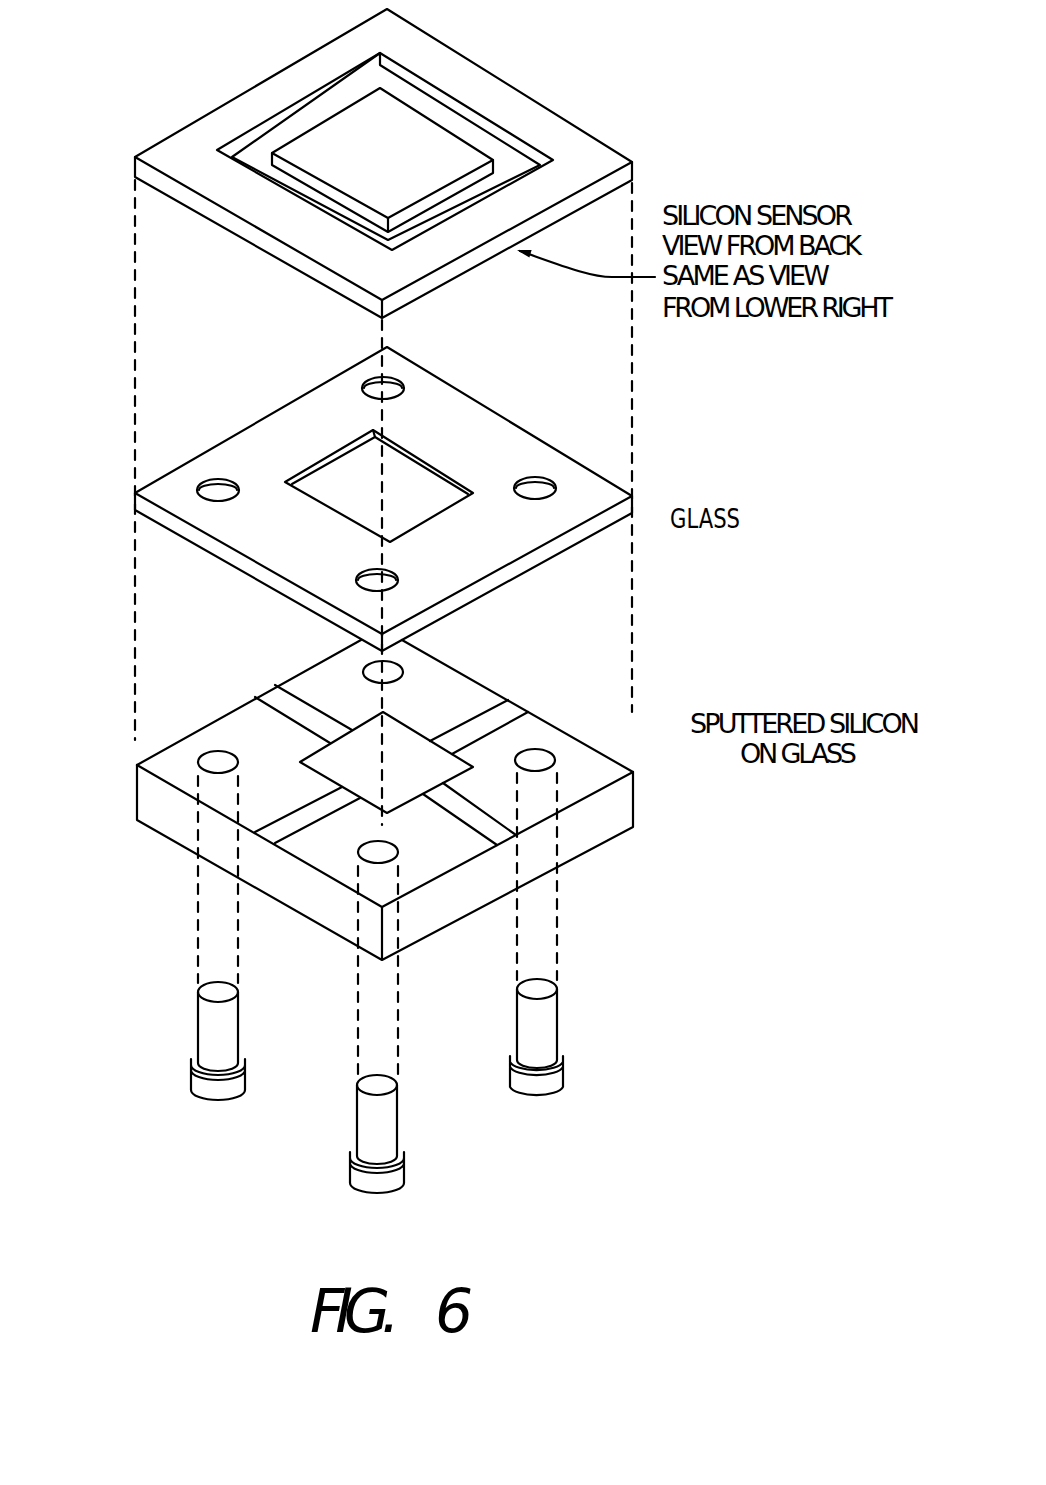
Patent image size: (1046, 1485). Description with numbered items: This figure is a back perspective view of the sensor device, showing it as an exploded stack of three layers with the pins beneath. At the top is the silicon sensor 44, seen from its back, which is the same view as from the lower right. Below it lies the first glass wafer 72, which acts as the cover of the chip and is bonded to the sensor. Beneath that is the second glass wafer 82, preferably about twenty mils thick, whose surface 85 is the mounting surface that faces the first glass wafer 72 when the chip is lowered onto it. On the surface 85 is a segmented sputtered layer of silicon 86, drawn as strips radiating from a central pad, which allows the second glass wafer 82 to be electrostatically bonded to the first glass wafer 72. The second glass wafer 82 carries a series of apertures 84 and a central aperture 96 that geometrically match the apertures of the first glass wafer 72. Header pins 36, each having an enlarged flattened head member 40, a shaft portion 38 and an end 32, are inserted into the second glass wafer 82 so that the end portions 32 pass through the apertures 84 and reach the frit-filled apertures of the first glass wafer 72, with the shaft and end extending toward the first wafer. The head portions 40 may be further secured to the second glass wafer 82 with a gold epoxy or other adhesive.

The silicon sensor 44 is at (598, 141).
The first glass wafer 72 is at (614, 485).
The second glass wafer 82 is at (383, 796).
The apertures 84 is at (221, 758).
The surface 85 is at (603, 766).
The sputtered layer of silicon 86 is at (468, 684).
The aperture 96 is at (445, 768).
The end 32 is at (417, 1066).
The pins 36 is at (577, 990).
The shaft portion 38 is at (542, 1033).
The enlarged flattened head member 40 is at (570, 1078).